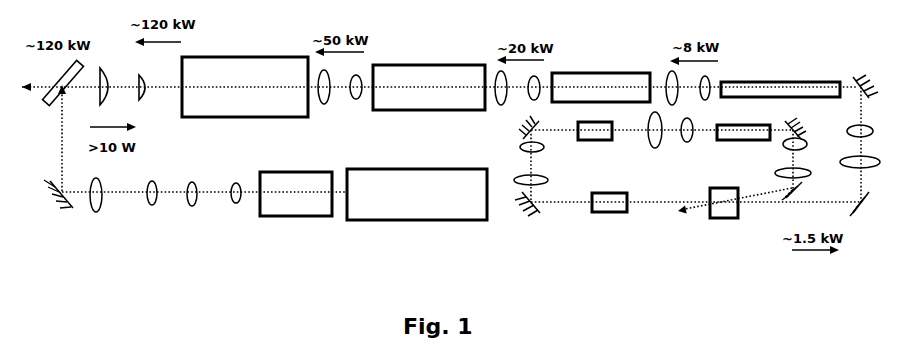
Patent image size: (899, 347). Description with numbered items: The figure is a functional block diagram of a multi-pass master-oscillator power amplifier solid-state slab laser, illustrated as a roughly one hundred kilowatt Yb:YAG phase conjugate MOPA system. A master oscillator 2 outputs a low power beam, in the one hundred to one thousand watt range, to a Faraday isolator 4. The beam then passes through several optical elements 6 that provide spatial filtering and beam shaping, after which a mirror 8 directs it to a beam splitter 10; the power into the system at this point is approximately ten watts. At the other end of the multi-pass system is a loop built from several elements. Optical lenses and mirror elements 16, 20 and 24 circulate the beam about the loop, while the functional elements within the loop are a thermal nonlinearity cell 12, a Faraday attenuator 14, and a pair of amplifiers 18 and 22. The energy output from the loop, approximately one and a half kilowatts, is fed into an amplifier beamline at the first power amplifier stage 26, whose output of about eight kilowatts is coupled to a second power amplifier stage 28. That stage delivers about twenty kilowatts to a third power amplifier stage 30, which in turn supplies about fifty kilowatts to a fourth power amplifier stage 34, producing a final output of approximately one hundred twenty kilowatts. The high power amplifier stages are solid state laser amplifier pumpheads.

The master oscillator 2 is at (400, 210).
The Faraday isolator 4 is at (303, 210).
The optical elements 6 is at (240, 208).
The mirror 8 is at (60, 203).
The beam splitter 10 is at (45, 103).
The thermal nonlinearity cell 12 is at (728, 210).
The Faraday attenuator 14 is at (613, 205).
The optical lenses and mirror element 16 is at (516, 195).
The amplifier 18 is at (595, 140).
The optical lenses and mirror element 20 is at (687, 143).
The amplifier 22 is at (745, 140).
The optical lenses and mirror element 24 is at (860, 197).
The first power amplifier stage 26 is at (755, 82).
The second power amplifier stage 28 is at (593, 73).
The third power amplifier stage 30 is at (417, 65).
The fourth power amplifier stage 34 is at (248, 57).